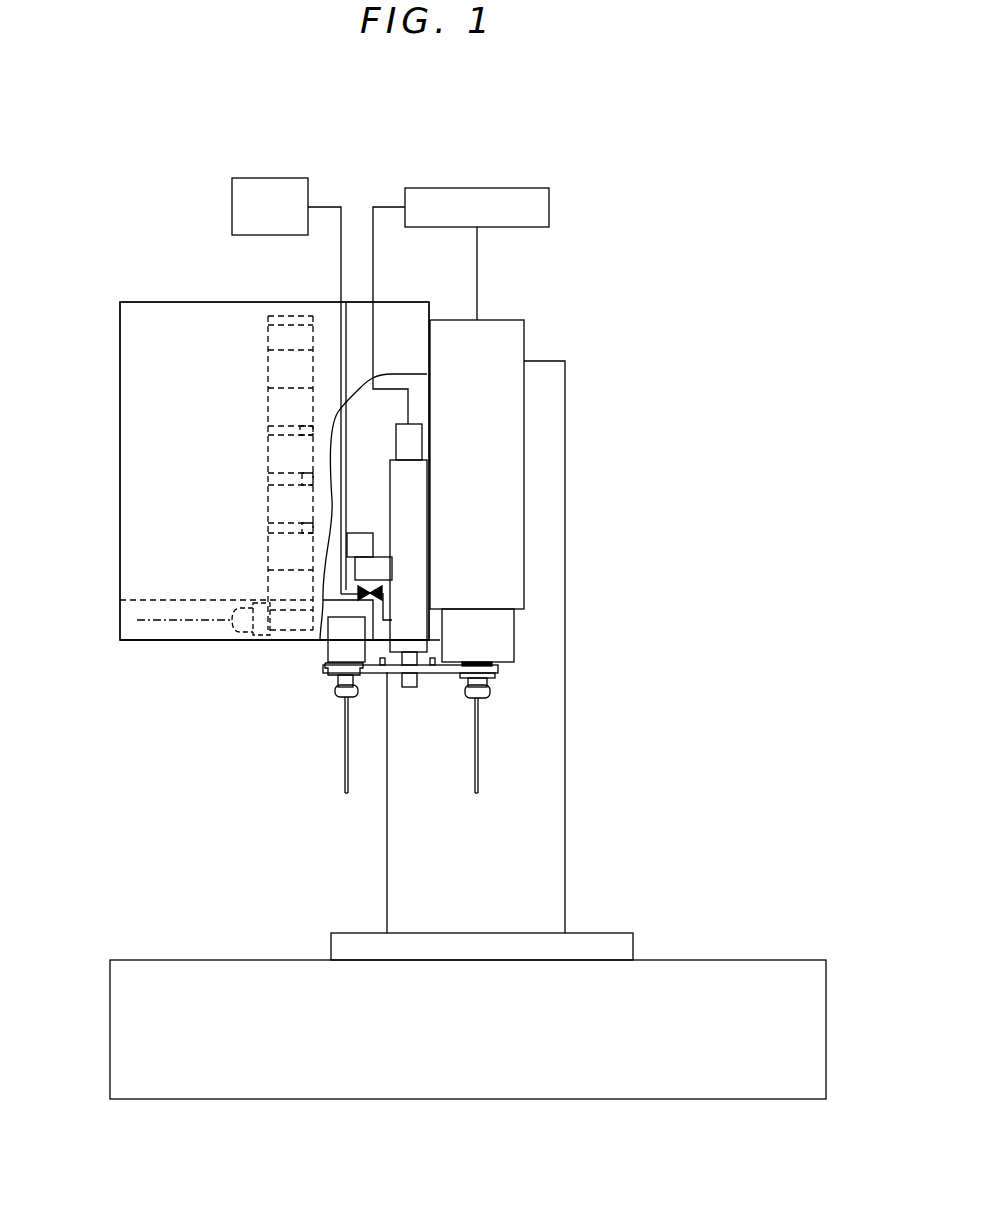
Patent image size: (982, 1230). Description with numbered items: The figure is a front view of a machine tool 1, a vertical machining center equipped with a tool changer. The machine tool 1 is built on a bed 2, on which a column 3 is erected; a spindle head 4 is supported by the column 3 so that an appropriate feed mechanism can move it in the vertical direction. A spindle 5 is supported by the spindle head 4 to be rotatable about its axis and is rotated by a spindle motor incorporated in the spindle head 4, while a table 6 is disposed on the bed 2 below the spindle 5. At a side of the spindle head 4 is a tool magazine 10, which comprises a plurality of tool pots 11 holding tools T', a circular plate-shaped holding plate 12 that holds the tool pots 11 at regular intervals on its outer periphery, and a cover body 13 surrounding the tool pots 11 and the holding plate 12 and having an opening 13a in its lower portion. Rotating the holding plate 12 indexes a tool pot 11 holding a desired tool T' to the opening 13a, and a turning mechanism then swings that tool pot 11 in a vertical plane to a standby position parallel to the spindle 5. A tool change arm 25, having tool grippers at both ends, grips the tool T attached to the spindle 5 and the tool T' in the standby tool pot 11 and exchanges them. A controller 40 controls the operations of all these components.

The machine tool 1 is at (114, 159).
The bed 2 is at (752, 967).
The column 3 is at (558, 424).
The spindle head 4 is at (520, 331).
The spindle 5 is at (509, 639).
The table 6 is at (612, 938).
The tool magazine 10 is at (130, 285).
The tool pot 11 is at (272, 505).
The holding plate 12 is at (300, 428).
The cover body 13 is at (125, 395).
The opening 13a is at (126, 629).
The tool change arm 25 is at (409, 696).
The controller 40 is at (505, 188).
The tool T is at (518, 737).
The tool T' is at (297, 730).